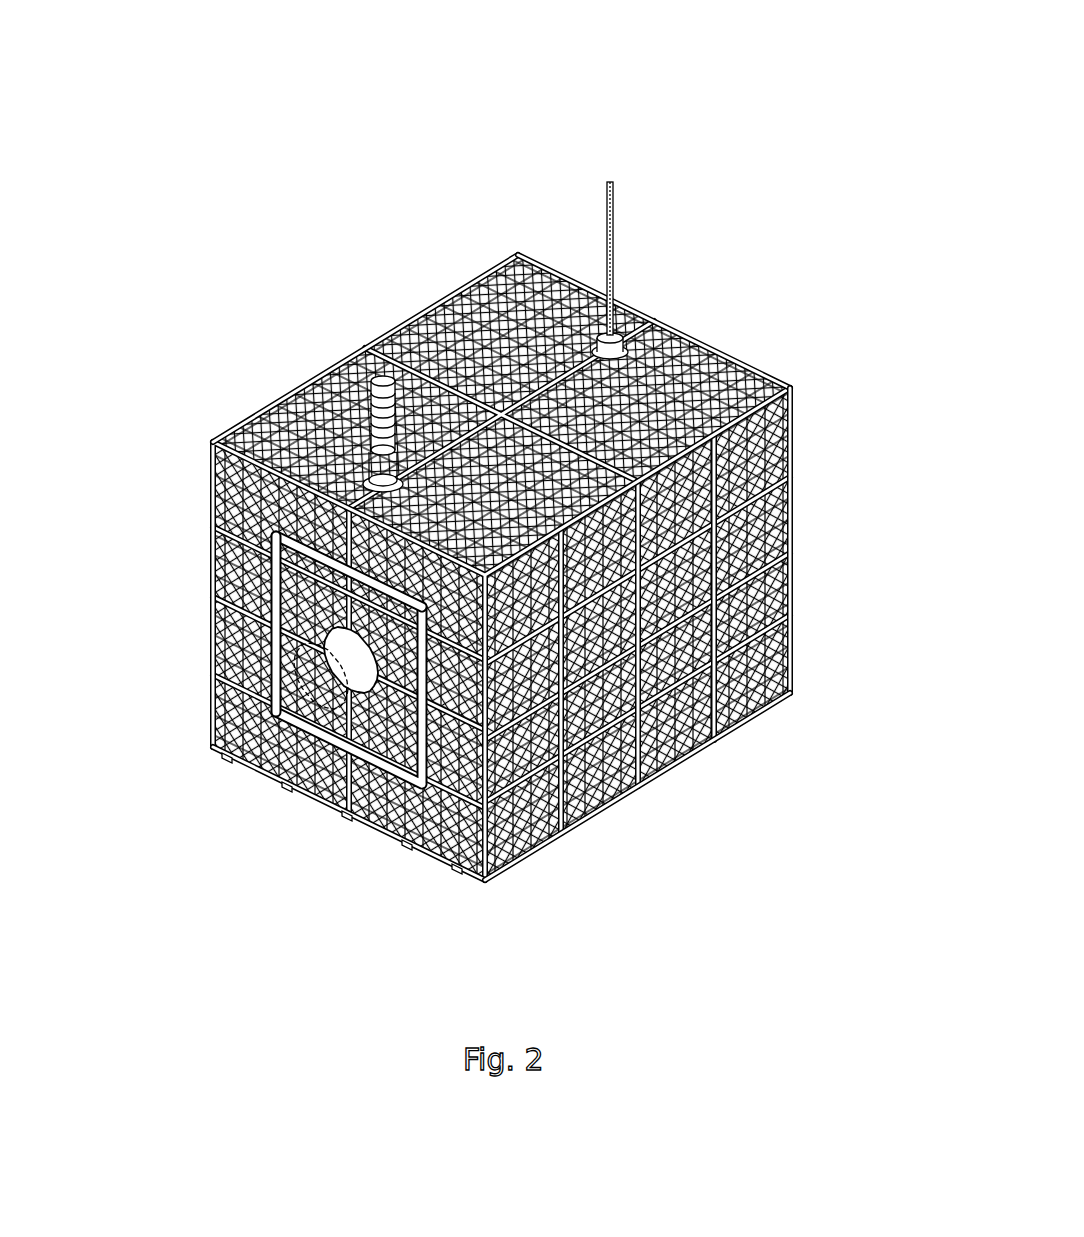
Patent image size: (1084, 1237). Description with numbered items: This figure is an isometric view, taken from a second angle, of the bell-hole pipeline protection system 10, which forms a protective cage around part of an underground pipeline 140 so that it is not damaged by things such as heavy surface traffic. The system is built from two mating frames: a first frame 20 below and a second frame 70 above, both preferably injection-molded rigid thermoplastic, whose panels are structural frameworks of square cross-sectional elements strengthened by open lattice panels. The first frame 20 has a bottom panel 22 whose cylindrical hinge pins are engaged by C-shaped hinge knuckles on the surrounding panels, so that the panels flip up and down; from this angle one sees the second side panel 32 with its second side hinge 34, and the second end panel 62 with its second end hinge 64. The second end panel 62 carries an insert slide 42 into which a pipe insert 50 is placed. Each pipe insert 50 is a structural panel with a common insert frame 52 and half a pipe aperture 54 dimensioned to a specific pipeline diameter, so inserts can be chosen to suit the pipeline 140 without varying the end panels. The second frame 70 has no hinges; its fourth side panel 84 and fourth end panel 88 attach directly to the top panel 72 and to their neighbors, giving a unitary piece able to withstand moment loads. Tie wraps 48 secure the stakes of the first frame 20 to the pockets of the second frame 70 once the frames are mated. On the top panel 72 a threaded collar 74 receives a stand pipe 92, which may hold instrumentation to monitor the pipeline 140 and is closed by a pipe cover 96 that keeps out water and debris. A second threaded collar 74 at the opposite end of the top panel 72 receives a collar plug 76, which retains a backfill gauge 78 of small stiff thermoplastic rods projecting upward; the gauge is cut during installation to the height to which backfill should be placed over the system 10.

The pipeline protection system 10 is at (178, 140).
The first frame 20 is at (803, 594).
The bottom panel 22 is at (380, 833).
The second side panel 32 is at (787, 668).
The second side hinge 34 is at (683, 760).
The insert slide 42 is at (280, 627).
The tie wrap 48 is at (785, 545).
The pipe insert 50 is at (202, 596).
The insert frame 52 is at (232, 632).
The pipe aperture 54 is at (276, 600).
The second end panel 62 is at (312, 670).
The second end hinge 64 is at (435, 858).
The second frame 70 is at (800, 497).
The top panel 72 is at (430, 308).
The threaded collar 74 is at (668, 328).
The collar plug 76 is at (630, 320).
The backfill gauge 78 is at (613, 252).
The fourth side panel 84 is at (790, 487).
The fourth end panel 88 is at (262, 536).
The stand pipe 92 is at (318, 383).
The pipe cover 96 is at (376, 372).
The pipeline 140 is at (222, 748).